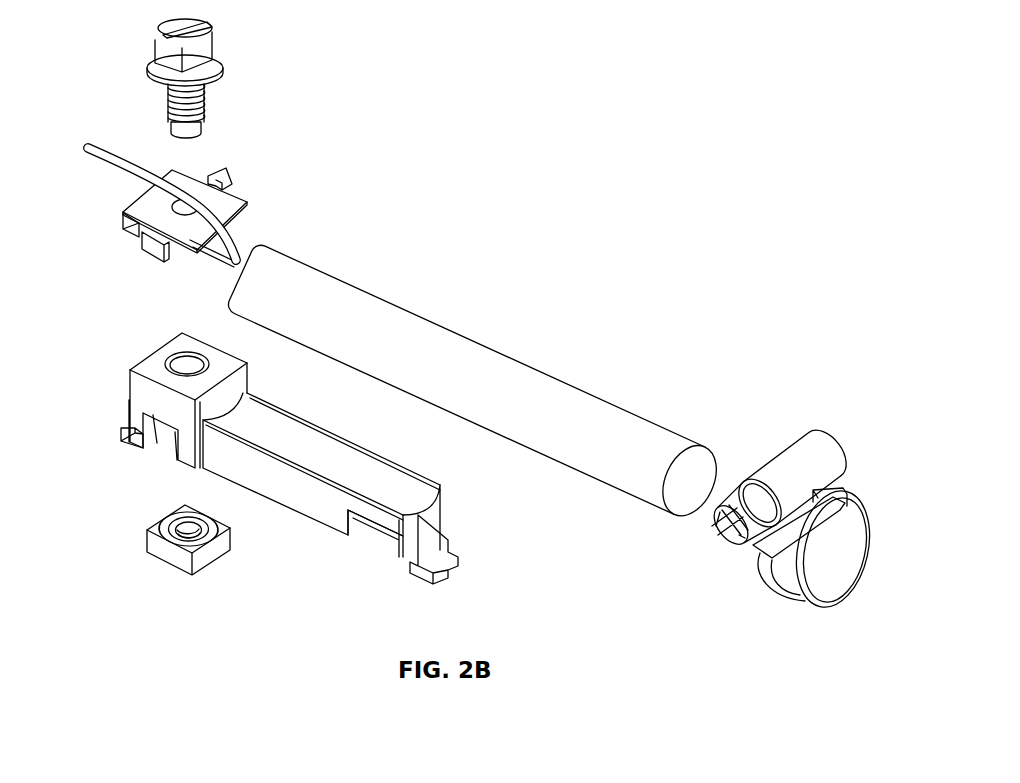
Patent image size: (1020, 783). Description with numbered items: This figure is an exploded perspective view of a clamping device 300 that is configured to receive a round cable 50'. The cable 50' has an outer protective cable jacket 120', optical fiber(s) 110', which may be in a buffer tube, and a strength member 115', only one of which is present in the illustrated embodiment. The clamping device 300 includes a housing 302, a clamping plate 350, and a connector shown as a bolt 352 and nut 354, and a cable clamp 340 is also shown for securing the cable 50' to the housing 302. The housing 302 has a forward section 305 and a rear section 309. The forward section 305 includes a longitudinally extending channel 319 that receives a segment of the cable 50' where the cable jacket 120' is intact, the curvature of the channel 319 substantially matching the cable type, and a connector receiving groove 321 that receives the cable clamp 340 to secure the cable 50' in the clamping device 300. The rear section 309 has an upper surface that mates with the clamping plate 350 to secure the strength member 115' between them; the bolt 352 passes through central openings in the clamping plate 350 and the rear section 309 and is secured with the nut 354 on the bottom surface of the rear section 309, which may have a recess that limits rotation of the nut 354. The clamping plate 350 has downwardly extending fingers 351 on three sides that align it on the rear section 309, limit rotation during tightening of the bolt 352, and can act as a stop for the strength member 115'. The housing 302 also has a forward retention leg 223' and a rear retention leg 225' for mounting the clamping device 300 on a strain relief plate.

The clamping device 300 is at (616, 31).
The cable 50' is at (689, 444).
The optical fiber(s) 110' is at (162, 176).
The strength member(s) 115' is at (201, 278).
The cable jacket 120' is at (477, 384).
The forward retention leg 223' is at (473, 563).
The rear retention leg 225' is at (92, 457).
The housing 302 is at (289, 474).
The forward section 305 is at (388, 454).
The rear section 309 is at (221, 338).
The channel 319 is at (425, 491).
The connector receiving groove 321 is at (382, 547).
The cable clamp 340 is at (818, 447).
The clamping plate 350 is at (168, 235).
The fingers 351 is at (220, 180).
The bolt 352 is at (222, 55).
The nut 354 is at (170, 568).